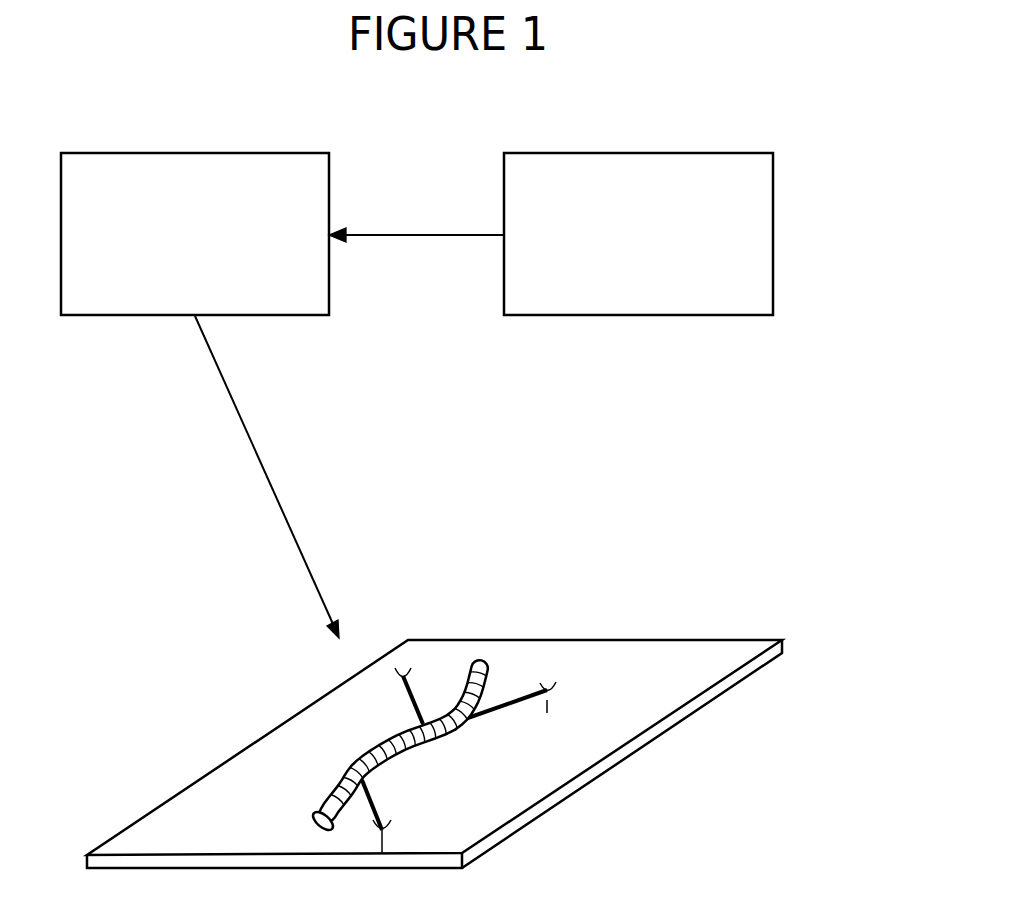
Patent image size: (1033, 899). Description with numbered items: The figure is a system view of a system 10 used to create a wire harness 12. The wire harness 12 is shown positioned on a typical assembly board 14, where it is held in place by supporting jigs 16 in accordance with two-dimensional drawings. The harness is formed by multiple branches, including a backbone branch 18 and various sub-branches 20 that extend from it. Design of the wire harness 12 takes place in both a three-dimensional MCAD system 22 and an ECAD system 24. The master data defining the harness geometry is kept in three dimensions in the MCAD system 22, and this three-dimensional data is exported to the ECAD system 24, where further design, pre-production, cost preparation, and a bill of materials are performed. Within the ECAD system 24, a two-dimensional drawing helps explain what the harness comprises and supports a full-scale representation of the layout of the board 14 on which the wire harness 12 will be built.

The system 10 is at (606, 86).
The wire harness 12 is at (333, 788).
The assembly board 14 is at (580, 640).
The supporting jigs 16 is at (547, 713).
The backbone branch 18 is at (360, 750).
The sub-branches 20 is at (413, 707).
The MCAD system 22 is at (517, 315).
The ECAD system 24 is at (310, 315).